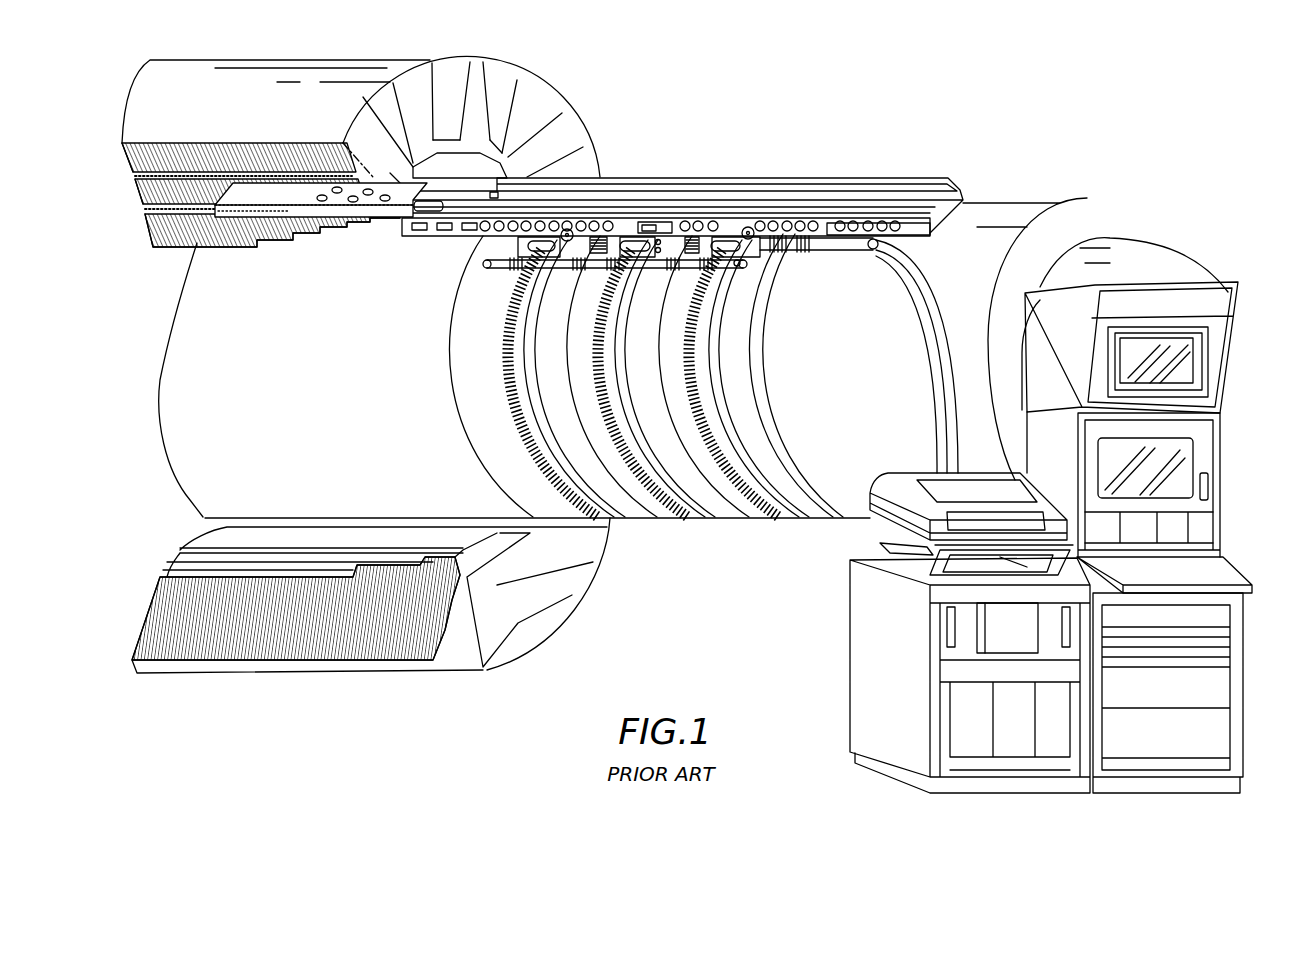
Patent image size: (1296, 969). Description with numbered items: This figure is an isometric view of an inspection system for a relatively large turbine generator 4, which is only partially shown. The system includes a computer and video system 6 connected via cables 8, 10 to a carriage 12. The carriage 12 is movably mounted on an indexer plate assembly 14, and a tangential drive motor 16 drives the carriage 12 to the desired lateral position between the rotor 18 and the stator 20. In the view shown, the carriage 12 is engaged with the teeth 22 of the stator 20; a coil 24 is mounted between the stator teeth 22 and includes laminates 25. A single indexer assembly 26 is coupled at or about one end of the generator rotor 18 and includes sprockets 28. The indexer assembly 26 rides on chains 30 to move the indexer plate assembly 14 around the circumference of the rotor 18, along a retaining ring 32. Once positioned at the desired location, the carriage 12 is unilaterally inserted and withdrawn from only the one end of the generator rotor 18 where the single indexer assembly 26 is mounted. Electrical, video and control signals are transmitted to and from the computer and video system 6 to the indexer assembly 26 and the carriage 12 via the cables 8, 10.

The turbine generator 4 is at (396, 77).
The computer and video system 6 is at (1005, 495).
The cable 8 is at (917, 356).
The cable 10 is at (911, 361).
The carriage 12 is at (321, 232).
The indexer plate assembly 14 is at (676, 170).
The tangential drive motor 16 is at (878, 262).
The rotor 18 is at (495, 410).
The stator 20 is at (476, 343).
The teeth 22 is at (447, 84).
The coil 24 is at (490, 78).
The laminates 25 is at (299, 426).
The indexer assembly 26 is at (678, 268).
The sprockets 28 is at (620, 270).
The chains 30 is at (629, 376).
The retaining ring 32 is at (796, 394).